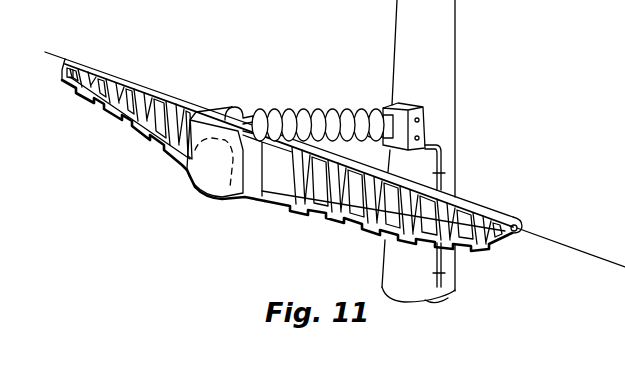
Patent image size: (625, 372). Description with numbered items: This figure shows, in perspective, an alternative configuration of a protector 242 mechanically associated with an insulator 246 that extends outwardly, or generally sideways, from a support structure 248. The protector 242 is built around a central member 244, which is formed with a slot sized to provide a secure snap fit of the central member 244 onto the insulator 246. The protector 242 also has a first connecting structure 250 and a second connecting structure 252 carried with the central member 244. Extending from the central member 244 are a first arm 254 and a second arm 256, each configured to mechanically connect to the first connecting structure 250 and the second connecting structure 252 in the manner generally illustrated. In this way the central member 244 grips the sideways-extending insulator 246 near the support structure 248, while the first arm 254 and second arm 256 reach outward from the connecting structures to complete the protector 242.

The protector 242 is at (180, 215).
The central member 244 is at (190, 165).
The insulator 246 is at (317, 108).
The support structure 248 is at (457, 4).
The first connecting structure 250 is at (210, 105).
The second connecting structure 252 is at (253, 201).
The first arm 254 is at (100, 70).
The second arm 256 is at (486, 206).